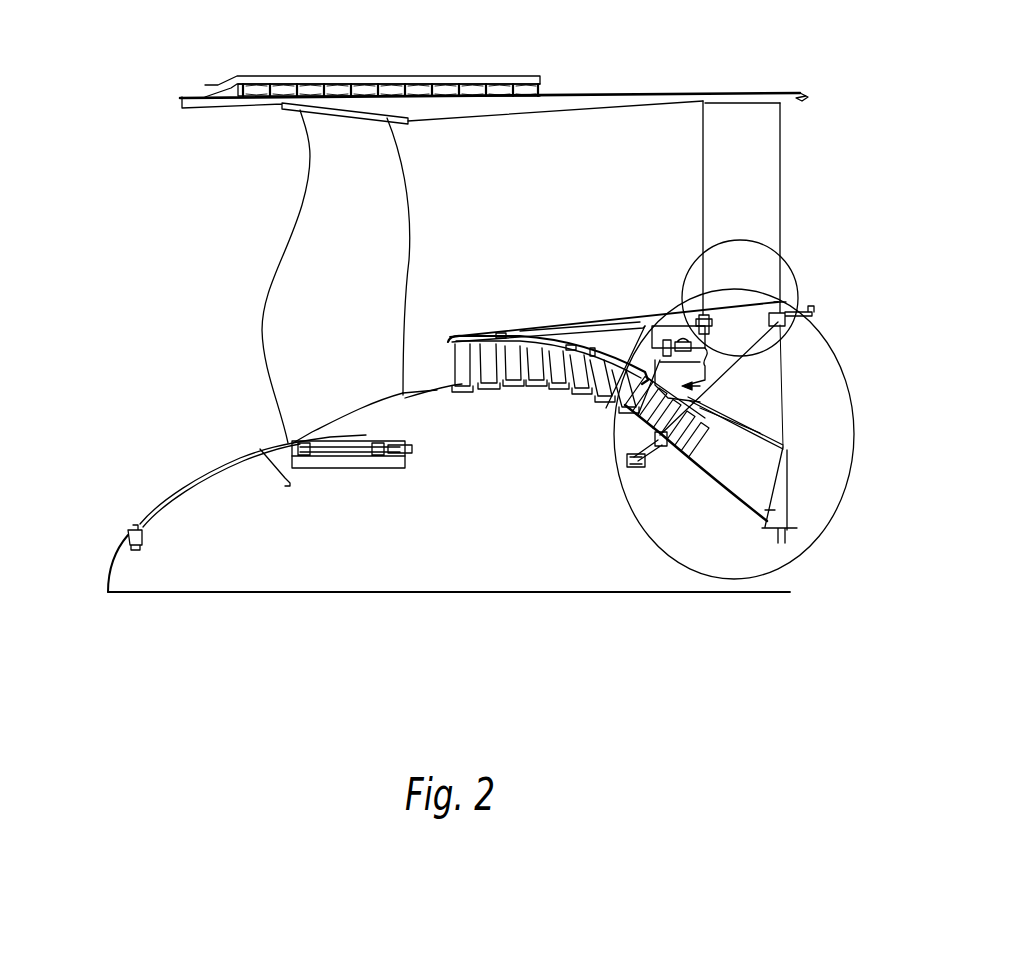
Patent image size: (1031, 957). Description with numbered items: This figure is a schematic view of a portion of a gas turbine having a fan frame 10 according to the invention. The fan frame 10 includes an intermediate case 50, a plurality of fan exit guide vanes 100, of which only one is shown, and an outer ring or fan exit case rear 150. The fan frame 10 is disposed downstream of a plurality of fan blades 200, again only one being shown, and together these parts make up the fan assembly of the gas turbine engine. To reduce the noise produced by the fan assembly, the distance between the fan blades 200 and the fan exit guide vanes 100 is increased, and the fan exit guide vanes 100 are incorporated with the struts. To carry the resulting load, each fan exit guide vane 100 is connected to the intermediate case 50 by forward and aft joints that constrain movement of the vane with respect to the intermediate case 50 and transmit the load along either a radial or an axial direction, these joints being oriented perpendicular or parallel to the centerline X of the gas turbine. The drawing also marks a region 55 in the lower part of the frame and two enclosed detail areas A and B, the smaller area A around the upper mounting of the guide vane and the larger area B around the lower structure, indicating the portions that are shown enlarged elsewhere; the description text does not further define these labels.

The fan frame 10 is at (920, 100).
The intermediate case 50 is at (746, 381).
The turbine strut 55 is at (810, 492).
The fan exit guide vane 100 is at (753, 198).
The fan exit case rear 150 is at (732, 94).
The fan blade 200 is at (343, 295).
The detail region A is at (783, 264).
The detail region B is at (812, 537).
The centerline X is at (480, 592).